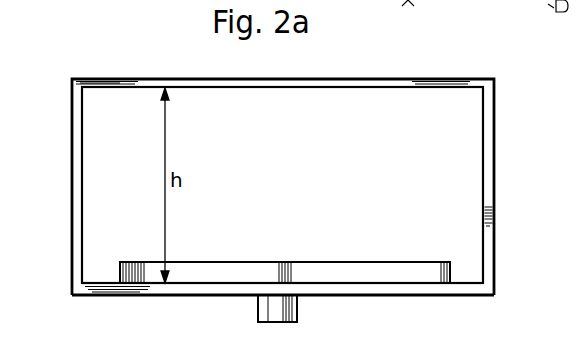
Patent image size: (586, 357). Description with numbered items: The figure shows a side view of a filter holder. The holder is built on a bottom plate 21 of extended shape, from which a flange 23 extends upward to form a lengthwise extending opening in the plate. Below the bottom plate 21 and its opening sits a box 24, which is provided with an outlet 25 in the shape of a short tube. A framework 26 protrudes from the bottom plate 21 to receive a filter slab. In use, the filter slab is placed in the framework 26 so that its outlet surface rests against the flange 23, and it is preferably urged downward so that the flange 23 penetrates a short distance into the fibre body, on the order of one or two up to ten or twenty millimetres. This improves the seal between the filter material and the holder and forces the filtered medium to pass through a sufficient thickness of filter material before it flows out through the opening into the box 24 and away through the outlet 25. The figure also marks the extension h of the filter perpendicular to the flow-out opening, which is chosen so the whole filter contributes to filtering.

The bottom plate 21 is at (102, 282).
The flange 23 is at (112, 262).
The box 24 is at (118, 297).
The outlet 25 is at (275, 310).
The framework 26 is at (353, 79).